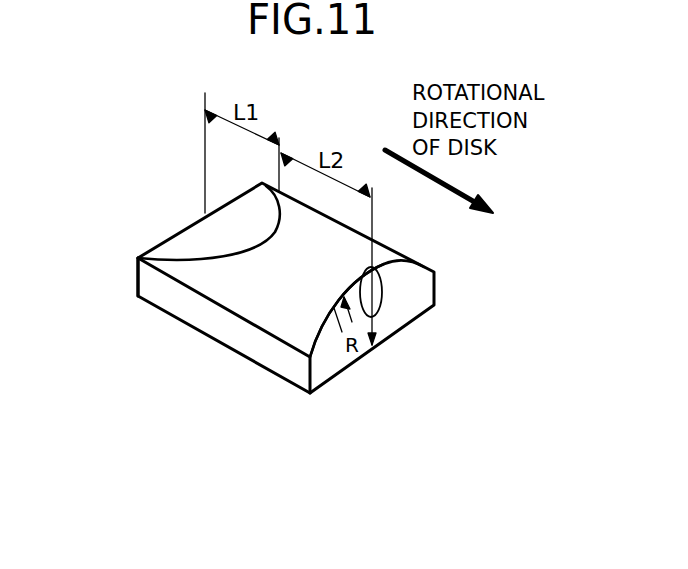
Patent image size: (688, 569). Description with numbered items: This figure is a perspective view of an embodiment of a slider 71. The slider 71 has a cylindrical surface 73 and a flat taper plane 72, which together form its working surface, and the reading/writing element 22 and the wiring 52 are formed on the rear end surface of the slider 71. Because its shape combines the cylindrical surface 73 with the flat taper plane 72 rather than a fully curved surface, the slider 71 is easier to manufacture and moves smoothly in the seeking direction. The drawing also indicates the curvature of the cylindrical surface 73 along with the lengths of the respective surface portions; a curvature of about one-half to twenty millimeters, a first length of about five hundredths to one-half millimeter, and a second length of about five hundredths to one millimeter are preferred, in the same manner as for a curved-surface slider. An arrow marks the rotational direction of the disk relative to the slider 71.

The slider 71 is at (160, 292).
The flat taper plane 72 is at (213, 242).
The cylindrical surface 73 is at (280, 315).
The reading/writing element 22 is at (366, 279).
The wiring 52 is at (377, 317).